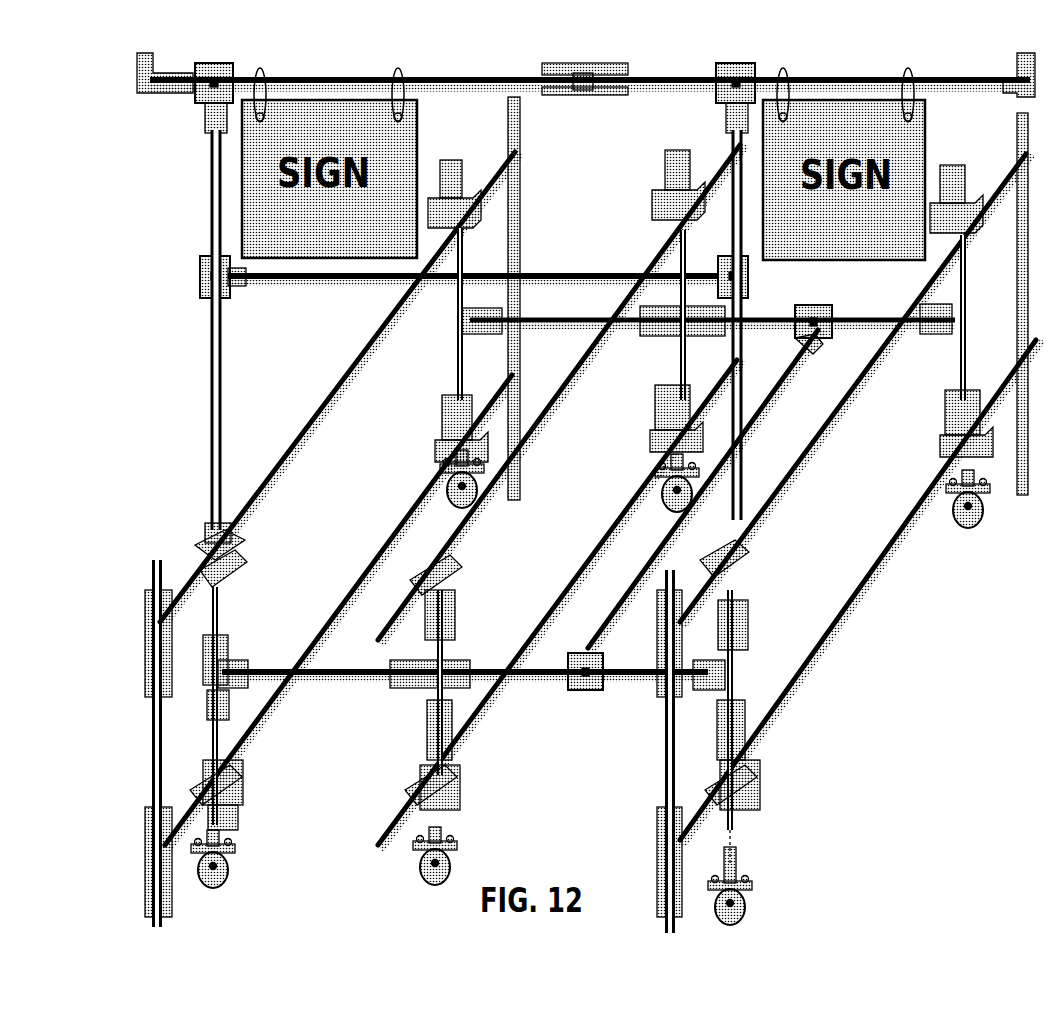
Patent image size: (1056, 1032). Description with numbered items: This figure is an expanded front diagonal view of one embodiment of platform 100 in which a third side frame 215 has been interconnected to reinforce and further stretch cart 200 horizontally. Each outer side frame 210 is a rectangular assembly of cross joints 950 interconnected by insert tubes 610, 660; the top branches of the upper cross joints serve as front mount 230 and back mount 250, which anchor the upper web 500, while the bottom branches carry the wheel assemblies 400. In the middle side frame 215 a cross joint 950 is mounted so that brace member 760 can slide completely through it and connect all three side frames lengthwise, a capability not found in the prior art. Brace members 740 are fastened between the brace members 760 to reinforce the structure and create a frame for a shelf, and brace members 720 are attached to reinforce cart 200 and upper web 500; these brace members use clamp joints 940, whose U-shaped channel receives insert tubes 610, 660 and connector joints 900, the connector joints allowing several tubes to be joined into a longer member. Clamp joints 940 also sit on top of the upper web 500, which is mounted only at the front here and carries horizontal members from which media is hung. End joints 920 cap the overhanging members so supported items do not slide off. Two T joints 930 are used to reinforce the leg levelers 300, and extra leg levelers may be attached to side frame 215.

The platform 100 is at (250, 46).
The connector joint 900 is at (592, 64).
The end joint 920 is at (1018, 60).
The clamp joint 940 is at (212, 104).
The back mount 250 is at (457, 162).
The upper web 500 is at (630, 156).
The insert tube 610 is at (302, 446).
The insert tube 660 is at (340, 388).
The brace member 720 is at (352, 284).
The brace member 740 is at (745, 428).
The brace member 760 is at (348, 682).
The leg leveler 300 is at (157, 550).
The side frame 210 is at (962, 372).
The third side frame 215 is at (672, 457).
The front mount 230 is at (228, 523).
The T joint 930 is at (225, 652).
The cross joint 950 is at (445, 648).
The cart 200 is at (912, 574).
The wheel assembly 400 is at (762, 907).